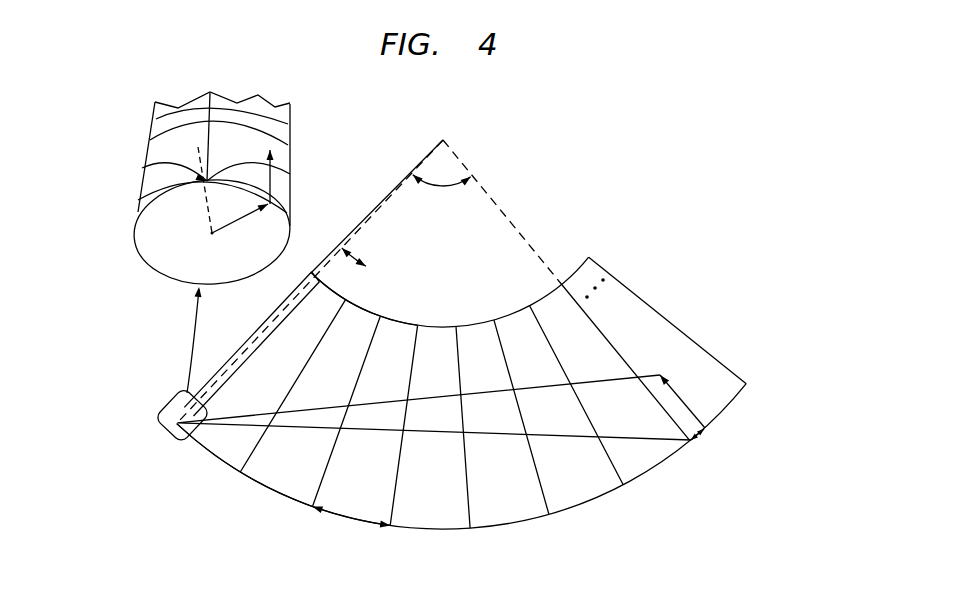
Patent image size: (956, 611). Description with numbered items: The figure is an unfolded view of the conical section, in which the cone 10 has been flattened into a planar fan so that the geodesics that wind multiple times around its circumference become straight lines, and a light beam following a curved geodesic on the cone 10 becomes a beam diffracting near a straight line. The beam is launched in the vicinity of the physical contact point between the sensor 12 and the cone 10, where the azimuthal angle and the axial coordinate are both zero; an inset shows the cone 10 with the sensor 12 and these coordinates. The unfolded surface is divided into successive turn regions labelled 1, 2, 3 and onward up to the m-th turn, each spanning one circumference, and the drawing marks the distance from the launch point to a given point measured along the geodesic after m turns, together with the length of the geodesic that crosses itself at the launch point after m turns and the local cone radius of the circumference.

The cone 10 is at (462, 345).
The sensor 12 is at (140, 204).
The detector segment 1 is at (261, 374).
The detector segment 2 is at (310, 403).
The detector segment 3 is at (365, 420).